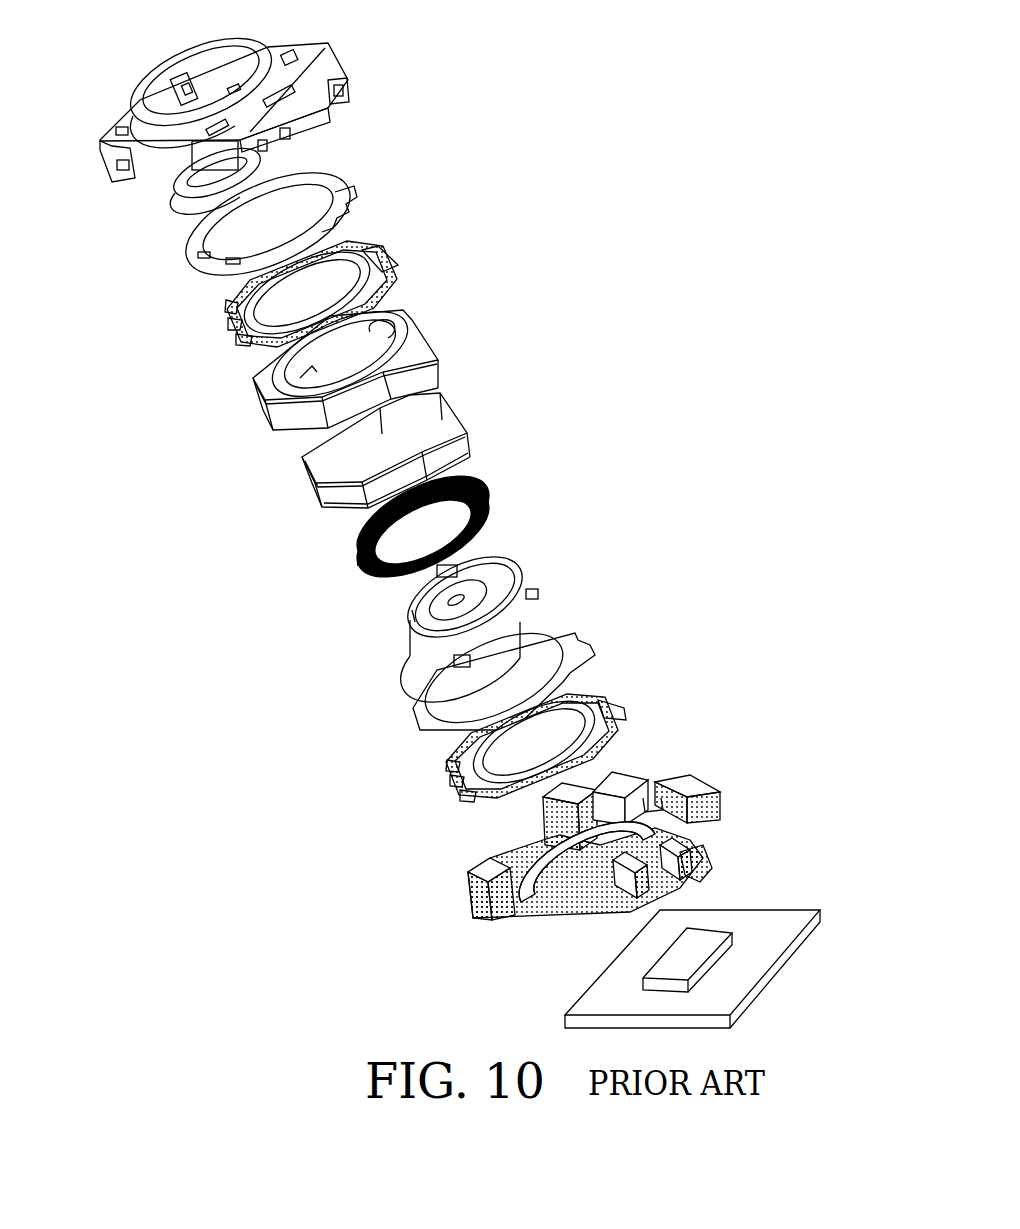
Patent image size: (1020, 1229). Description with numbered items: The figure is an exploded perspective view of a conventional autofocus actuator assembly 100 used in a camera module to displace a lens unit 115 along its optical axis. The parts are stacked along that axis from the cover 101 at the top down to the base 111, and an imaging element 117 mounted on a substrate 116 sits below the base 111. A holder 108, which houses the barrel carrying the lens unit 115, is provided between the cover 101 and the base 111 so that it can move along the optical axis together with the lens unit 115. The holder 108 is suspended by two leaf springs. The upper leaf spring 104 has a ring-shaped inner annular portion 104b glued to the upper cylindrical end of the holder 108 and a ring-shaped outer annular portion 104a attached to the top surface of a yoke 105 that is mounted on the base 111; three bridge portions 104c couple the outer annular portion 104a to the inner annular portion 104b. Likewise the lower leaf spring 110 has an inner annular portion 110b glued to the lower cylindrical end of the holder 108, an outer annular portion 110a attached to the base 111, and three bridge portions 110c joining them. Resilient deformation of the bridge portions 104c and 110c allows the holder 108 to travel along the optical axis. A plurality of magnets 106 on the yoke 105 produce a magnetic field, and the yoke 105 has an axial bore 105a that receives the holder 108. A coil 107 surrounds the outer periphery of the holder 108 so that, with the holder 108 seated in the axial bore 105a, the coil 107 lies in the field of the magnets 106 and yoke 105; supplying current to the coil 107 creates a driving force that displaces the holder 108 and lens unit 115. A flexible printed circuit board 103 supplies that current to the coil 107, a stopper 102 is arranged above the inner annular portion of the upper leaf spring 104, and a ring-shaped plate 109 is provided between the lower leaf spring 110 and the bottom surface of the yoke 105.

The autofocus actuator assembly 100 is at (557, 178).
The cover 101 is at (337, 63).
The stopper 102 is at (195, 180).
The flexible printed circuit board 103 is at (345, 186).
The upper leaf spring 104 is at (297, 312).
The outer annular portion 104a is at (237, 340).
The inner annular portion 104b is at (230, 307).
The bridge portions 104c is at (233, 326).
The yoke 105 is at (449, 312).
The axial bore 105a is at (362, 320).
The magnets 106 is at (466, 420).
The coil 107 is at (489, 500).
The holder 108 is at (466, 616).
The lens unit 115 is at (413, 601).
The ring-shaped plate 109 is at (590, 648).
The lower leaf spring 110 is at (511, 760).
The outer annular portion 110a is at (473, 792).
The inner annular portion 110b is at (453, 768).
The bridge portions 110c is at (457, 778).
The base 111 is at (722, 797).
The substrate 116 is at (717, 985).
The imaging element 117 is at (692, 943).